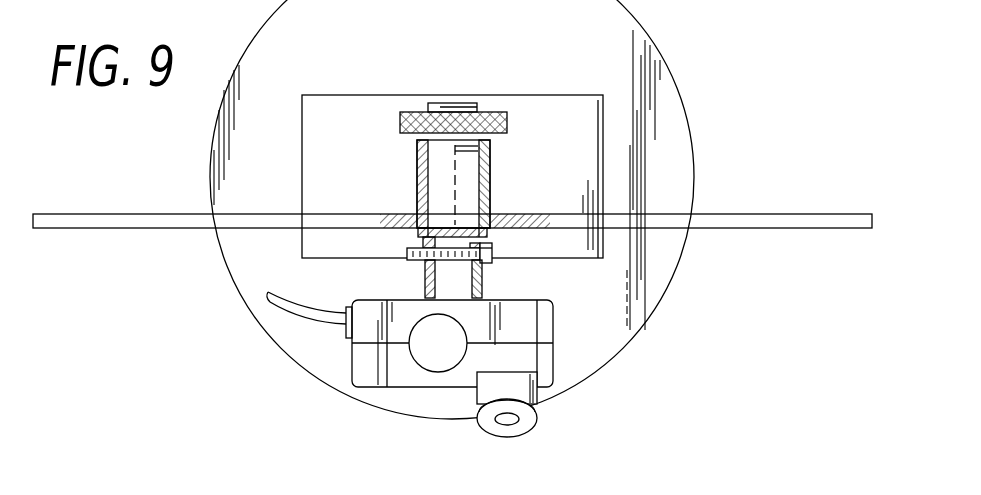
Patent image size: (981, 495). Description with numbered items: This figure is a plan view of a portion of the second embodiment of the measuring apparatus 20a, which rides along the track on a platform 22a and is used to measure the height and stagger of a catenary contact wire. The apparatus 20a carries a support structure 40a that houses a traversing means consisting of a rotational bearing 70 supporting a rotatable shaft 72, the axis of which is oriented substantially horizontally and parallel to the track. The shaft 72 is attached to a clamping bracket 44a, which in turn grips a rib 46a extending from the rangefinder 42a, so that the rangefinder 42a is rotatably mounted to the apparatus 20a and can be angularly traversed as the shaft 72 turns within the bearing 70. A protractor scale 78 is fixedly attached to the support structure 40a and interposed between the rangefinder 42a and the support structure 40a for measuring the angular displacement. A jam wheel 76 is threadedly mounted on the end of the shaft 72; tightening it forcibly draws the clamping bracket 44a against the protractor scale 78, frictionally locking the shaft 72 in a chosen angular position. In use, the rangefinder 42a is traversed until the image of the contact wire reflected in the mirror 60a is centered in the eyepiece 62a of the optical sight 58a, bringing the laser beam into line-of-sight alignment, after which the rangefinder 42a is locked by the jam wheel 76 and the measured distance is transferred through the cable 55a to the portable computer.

The apparatus 20a is at (431, 369).
The platform 22a is at (620, 338).
The support structure 40a is at (490, 177).
The rangefinder 42a is at (397, 387).
The clamping bracket 44a is at (483, 280).
The rib 46a is at (443, 277).
The cable 55a is at (292, 319).
The optical sight 58a is at (550, 411).
The mirror 60a is at (568, 429).
The eyepiece 62a is at (505, 438).
The rotational bearing 70 is at (407, 132).
The rotatable shaft 72 is at (433, 182).
The jam wheel 76 is at (503, 113).
The protractor scale 78 is at (112, 228).